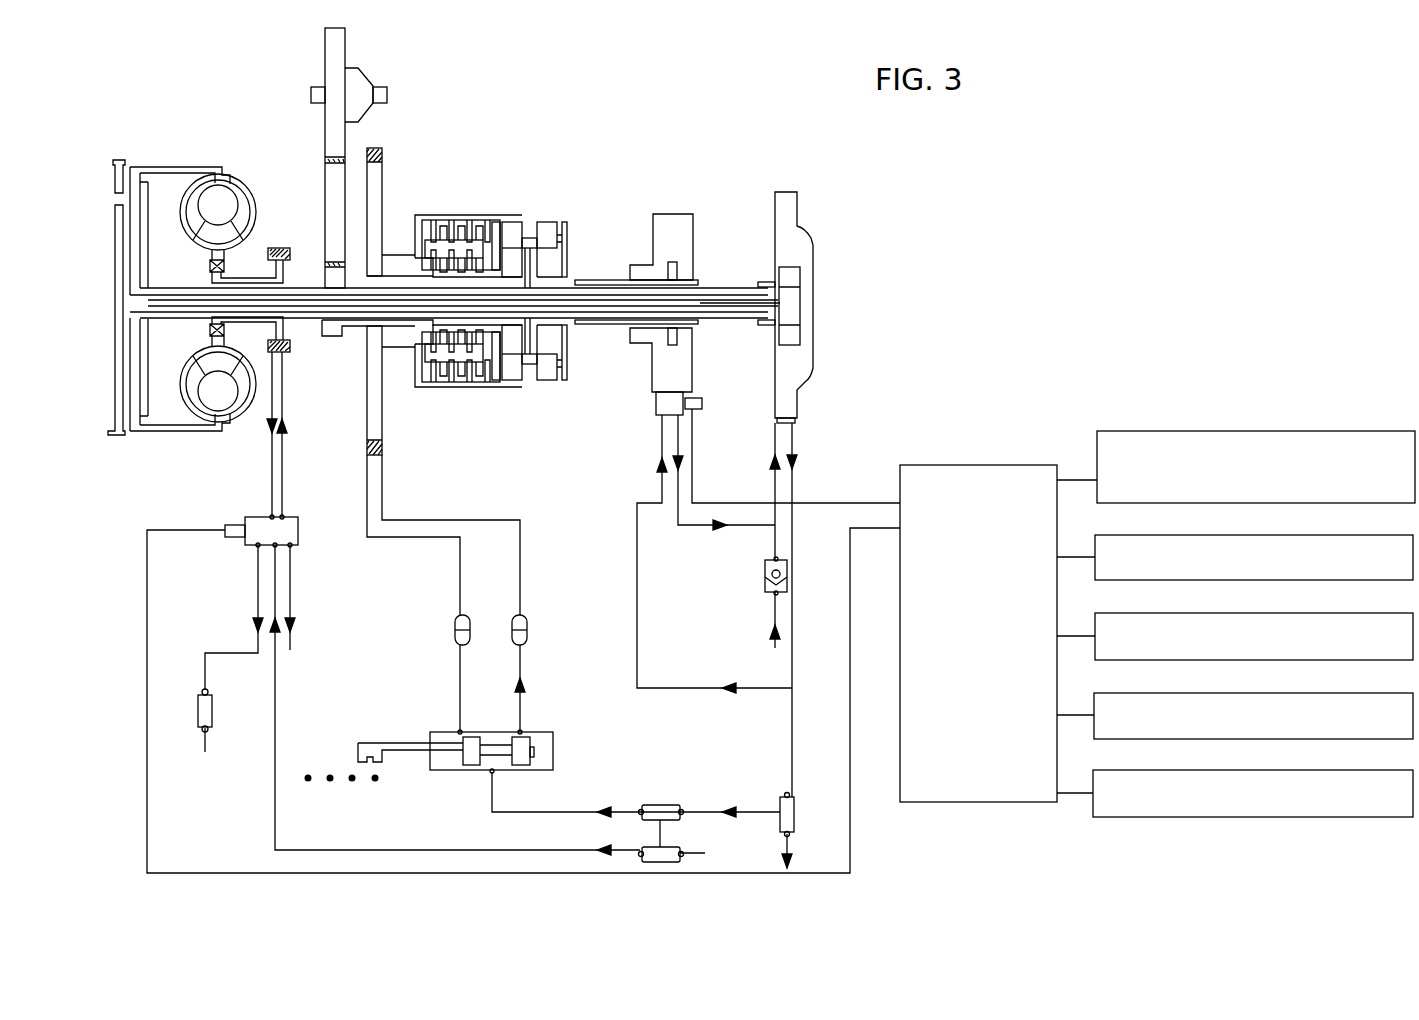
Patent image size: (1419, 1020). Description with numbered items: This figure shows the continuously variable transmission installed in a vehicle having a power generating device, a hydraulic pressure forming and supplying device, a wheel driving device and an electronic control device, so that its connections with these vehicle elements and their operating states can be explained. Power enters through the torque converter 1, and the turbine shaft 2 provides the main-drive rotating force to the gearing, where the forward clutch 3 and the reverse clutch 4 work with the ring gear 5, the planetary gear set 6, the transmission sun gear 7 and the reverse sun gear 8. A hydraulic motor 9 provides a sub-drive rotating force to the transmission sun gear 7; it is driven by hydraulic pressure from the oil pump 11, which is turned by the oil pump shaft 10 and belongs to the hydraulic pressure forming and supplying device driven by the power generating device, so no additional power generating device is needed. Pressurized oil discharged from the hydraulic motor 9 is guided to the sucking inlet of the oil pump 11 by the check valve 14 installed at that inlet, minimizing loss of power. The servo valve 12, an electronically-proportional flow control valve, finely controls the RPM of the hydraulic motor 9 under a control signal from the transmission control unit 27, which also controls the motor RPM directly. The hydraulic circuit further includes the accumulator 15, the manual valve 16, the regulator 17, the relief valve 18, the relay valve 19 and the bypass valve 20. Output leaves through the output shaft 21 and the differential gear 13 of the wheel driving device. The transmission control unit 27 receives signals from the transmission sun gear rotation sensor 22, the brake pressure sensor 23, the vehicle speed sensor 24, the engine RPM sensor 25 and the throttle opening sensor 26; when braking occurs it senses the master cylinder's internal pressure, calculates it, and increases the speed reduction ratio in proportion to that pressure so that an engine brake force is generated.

The torque converter 1 is at (232, 202).
The turbine shaft 2 is at (303, 288).
The forward clutch 3 is at (437, 218).
The reverse clutch 4 is at (453, 260).
The ring gear 5 is at (515, 223).
The planetary gear set 6 is at (547, 228).
The transmission sun gear 7 is at (553, 274).
The reverse sun gear 8 is at (517, 267).
The hydraulic motor 9 is at (673, 216).
The oil pump shaft 10 is at (745, 306).
The oil pump 11 is at (798, 208).
The servo valve 12 is at (703, 405).
The differential gear 13 is at (362, 82).
The check valve 14 is at (767, 578).
The accumulator 15 is at (527, 622).
The manual valve 16 is at (546, 730).
The regulator 17 is at (668, 805).
The relief valve 18 is at (795, 817).
The relay valve 19 is at (260, 517).
The bypass valve 20 is at (212, 708).
The output shaft 21 is at (350, 276).
The transmission sun gear rotation sensor 22 is at (1366, 431).
The brake pressure sensor 23 is at (1366, 535).
The vehicle speed sensor 24 is at (1364, 613).
The engine RPM sensor 25 is at (1364, 693).
The throttle opening sensor 26 is at (1364, 770).
The transmission control unit 27 is at (1008, 465).